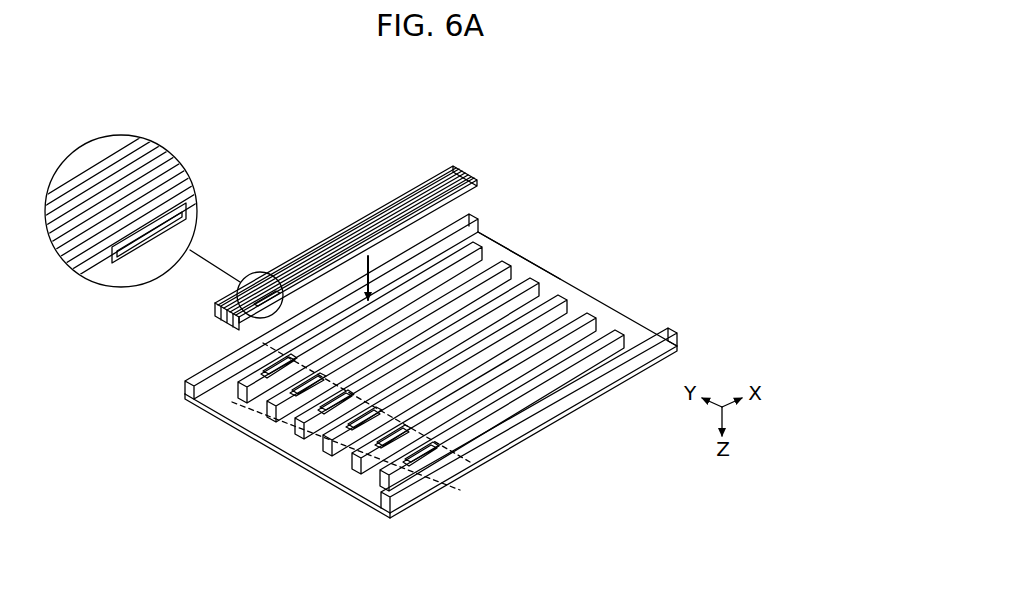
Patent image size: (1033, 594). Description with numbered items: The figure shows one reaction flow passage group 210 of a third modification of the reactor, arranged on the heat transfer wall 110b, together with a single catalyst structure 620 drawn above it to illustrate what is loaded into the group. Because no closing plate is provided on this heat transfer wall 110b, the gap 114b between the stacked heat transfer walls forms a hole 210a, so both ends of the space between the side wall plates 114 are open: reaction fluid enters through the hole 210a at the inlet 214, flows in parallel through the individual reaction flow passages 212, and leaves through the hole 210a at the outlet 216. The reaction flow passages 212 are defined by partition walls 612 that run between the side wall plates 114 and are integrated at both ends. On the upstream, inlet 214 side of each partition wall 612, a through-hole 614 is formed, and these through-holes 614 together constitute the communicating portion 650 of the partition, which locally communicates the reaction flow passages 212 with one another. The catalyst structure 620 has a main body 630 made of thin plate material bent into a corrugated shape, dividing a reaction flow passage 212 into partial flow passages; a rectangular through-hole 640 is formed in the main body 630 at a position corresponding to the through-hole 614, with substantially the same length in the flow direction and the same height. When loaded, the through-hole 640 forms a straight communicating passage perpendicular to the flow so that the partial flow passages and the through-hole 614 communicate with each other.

The reaction flow passage group 210 is at (632, 207).
The gap 114b is at (641, 336).
The hole 210a is at (431, 372).
The inlet 214 is at (287, 456).
The outlet 216 is at (533, 432).
The side wall plate 114 is at (183, 391).
The through-hole 614 is at (380, 485).
The reaction flow passage 212 is at (553, 368).
The partition wall 612 is at (623, 332).
The heat transfer wall 110b is at (498, 256).
The communicating portion 650 is at (470, 466).
The catalyst structure 620 is at (321, 223).
The main body 630 is at (150, 137).
The through-hole 640 is at (131, 258).